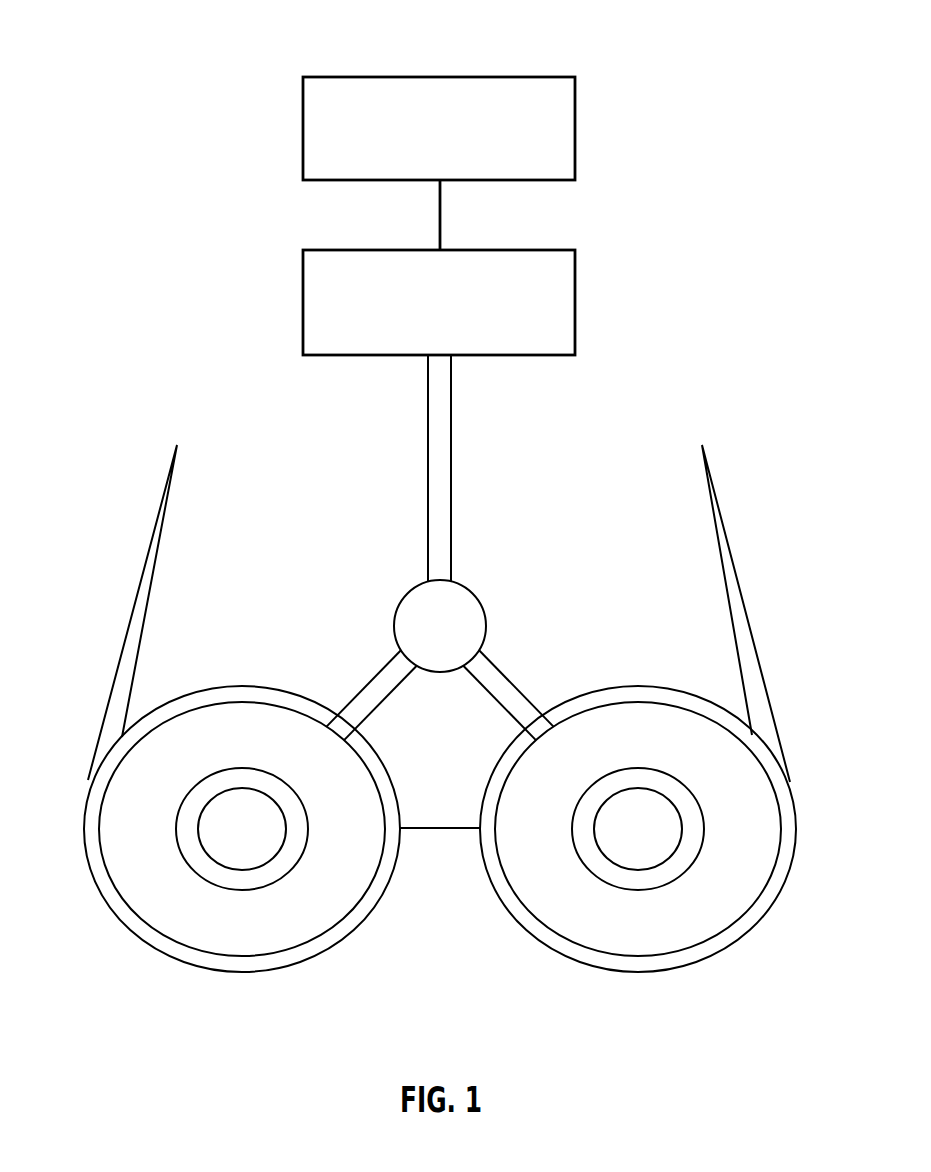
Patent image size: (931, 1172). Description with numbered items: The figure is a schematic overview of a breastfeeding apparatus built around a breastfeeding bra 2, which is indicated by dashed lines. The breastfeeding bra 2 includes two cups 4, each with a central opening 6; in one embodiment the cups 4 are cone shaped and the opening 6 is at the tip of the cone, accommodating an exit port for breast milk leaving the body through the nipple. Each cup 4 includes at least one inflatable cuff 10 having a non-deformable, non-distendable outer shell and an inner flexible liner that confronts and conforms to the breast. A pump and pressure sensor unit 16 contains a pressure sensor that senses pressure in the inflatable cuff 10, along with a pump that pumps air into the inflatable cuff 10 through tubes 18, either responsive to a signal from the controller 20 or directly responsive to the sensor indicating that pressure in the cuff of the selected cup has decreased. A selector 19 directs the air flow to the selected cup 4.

The breastfeeding bra 2 is at (742, 597).
The cup 4 is at (237, 687).
The central opening 6 is at (208, 842).
The inflatable cuff 10 is at (278, 943).
The pump and pressure sensor unit 16 is at (362, 250).
The tubes 18 is at (452, 468).
The selector 19 is at (463, 600).
The controller 20 is at (362, 75).